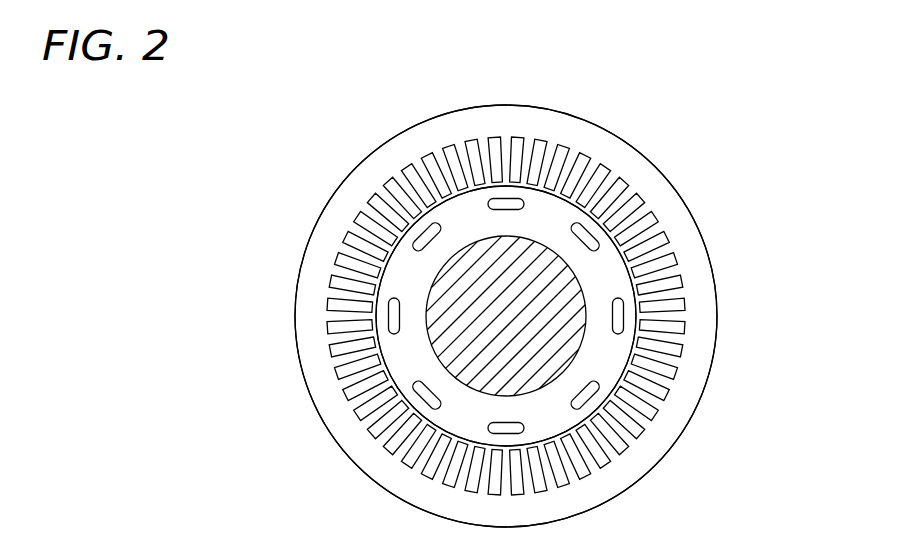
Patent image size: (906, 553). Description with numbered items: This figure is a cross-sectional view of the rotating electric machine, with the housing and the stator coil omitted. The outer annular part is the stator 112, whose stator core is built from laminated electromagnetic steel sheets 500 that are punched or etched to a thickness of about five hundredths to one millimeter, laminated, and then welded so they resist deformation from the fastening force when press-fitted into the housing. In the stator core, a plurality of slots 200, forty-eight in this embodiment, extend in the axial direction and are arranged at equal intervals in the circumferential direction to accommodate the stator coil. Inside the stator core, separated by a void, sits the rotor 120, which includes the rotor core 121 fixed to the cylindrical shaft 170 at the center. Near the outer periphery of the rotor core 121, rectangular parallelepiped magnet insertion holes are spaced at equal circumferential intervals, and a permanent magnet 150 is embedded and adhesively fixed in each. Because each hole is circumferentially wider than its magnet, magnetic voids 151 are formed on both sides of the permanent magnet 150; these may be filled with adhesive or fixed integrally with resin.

The stator 112 is at (345, 172).
The rotor 120 is at (377, 281).
The rotor core 121 is at (548, 238).
The permanent magnet 150 is at (604, 225).
The magnetic void 151 is at (605, 250).
The shaft 170 is at (445, 189).
The slot 200 is at (468, 273).
The electromagnetic steel sheet 500 is at (317, 348).